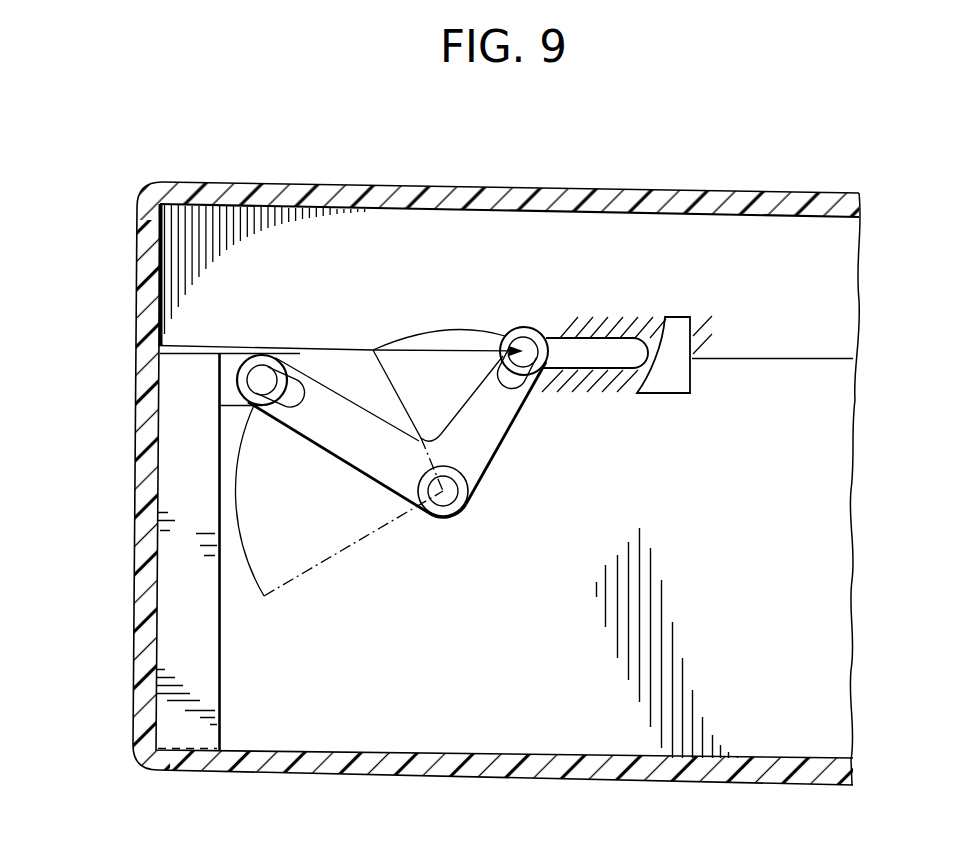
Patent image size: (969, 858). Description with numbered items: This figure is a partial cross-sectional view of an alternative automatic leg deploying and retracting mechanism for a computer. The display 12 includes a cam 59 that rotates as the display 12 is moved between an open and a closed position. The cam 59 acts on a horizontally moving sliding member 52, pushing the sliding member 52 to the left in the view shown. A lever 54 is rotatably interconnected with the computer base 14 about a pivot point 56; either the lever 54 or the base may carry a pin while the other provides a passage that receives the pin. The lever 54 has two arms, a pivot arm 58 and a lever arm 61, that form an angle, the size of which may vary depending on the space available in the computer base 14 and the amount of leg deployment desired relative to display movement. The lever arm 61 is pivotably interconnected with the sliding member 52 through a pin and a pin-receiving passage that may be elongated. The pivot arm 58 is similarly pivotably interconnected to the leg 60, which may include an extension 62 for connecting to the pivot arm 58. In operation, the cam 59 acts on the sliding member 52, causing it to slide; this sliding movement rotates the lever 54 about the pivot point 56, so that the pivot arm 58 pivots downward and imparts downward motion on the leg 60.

The display 12 is at (760, 192).
The computer base 14 is at (135, 495).
The sliding member 52 is at (580, 350).
The lever 54 is at (399, 446).
The pivot point 56 is at (450, 503).
The pivot arm 58 is at (337, 450).
The cam 59 is at (670, 396).
The leg 60 is at (202, 660).
The lever arm 61 is at (497, 425).
The extension 62 is at (261, 380).